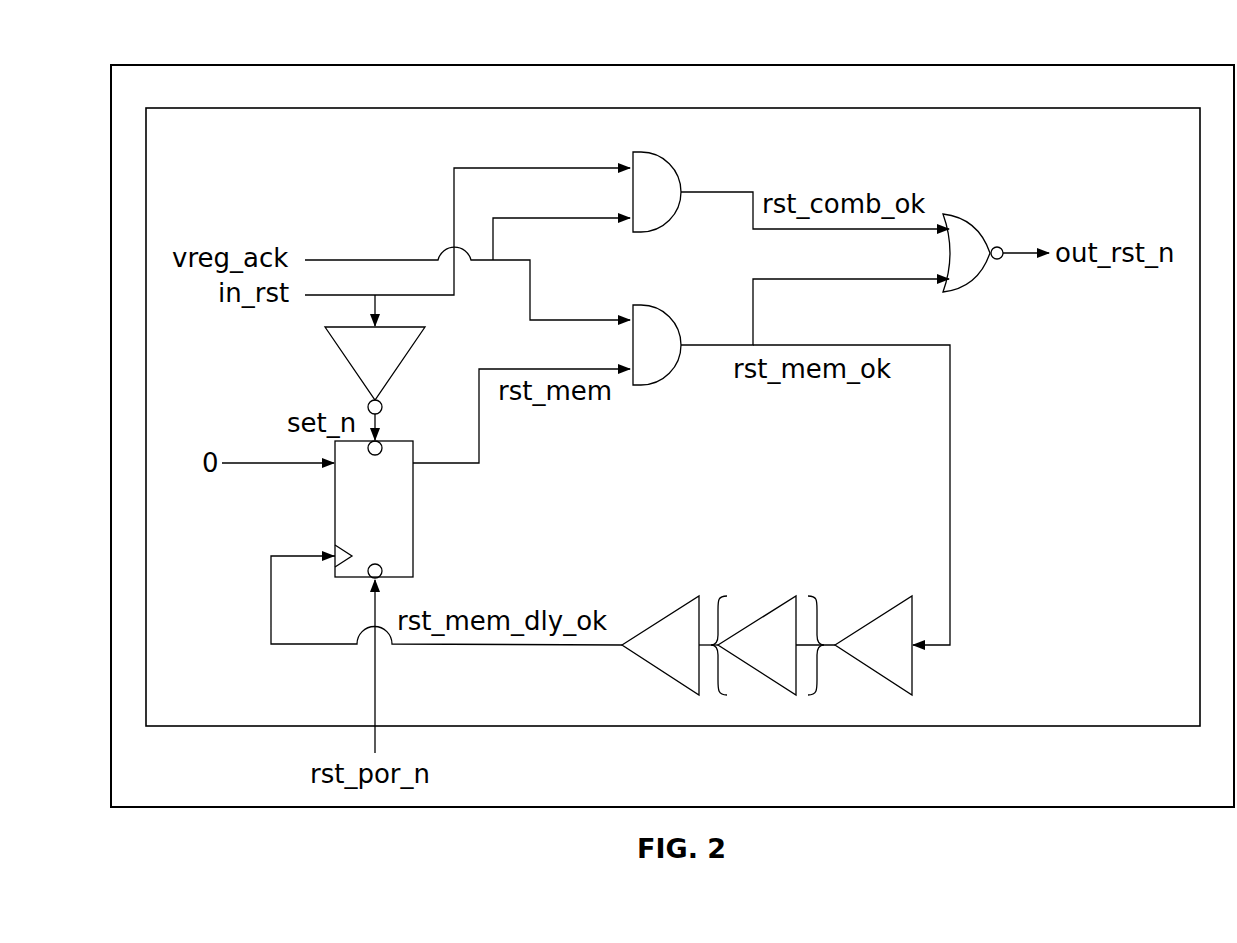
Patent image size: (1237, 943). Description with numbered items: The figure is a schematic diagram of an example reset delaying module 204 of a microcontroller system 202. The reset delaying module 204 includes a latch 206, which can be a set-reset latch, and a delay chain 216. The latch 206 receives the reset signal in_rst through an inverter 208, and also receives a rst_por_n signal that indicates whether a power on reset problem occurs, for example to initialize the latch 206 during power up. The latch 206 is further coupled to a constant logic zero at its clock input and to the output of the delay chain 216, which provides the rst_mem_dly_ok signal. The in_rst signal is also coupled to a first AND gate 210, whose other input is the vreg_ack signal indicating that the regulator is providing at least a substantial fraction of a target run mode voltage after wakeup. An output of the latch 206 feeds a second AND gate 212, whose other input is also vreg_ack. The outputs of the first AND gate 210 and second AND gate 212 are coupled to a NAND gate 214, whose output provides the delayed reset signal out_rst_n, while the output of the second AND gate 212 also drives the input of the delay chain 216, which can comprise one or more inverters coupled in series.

The microcontroller system 202 is at (172, 65).
The reset delaying module 204 is at (207, 108).
The latch 206 is at (413, 510).
The inverter 208 is at (400, 362).
The first AND gate 210 is at (664, 166).
The second AND gate 212 is at (664, 320).
The NAND gate 214 is at (975, 223).
The delay chain 216 is at (736, 568).